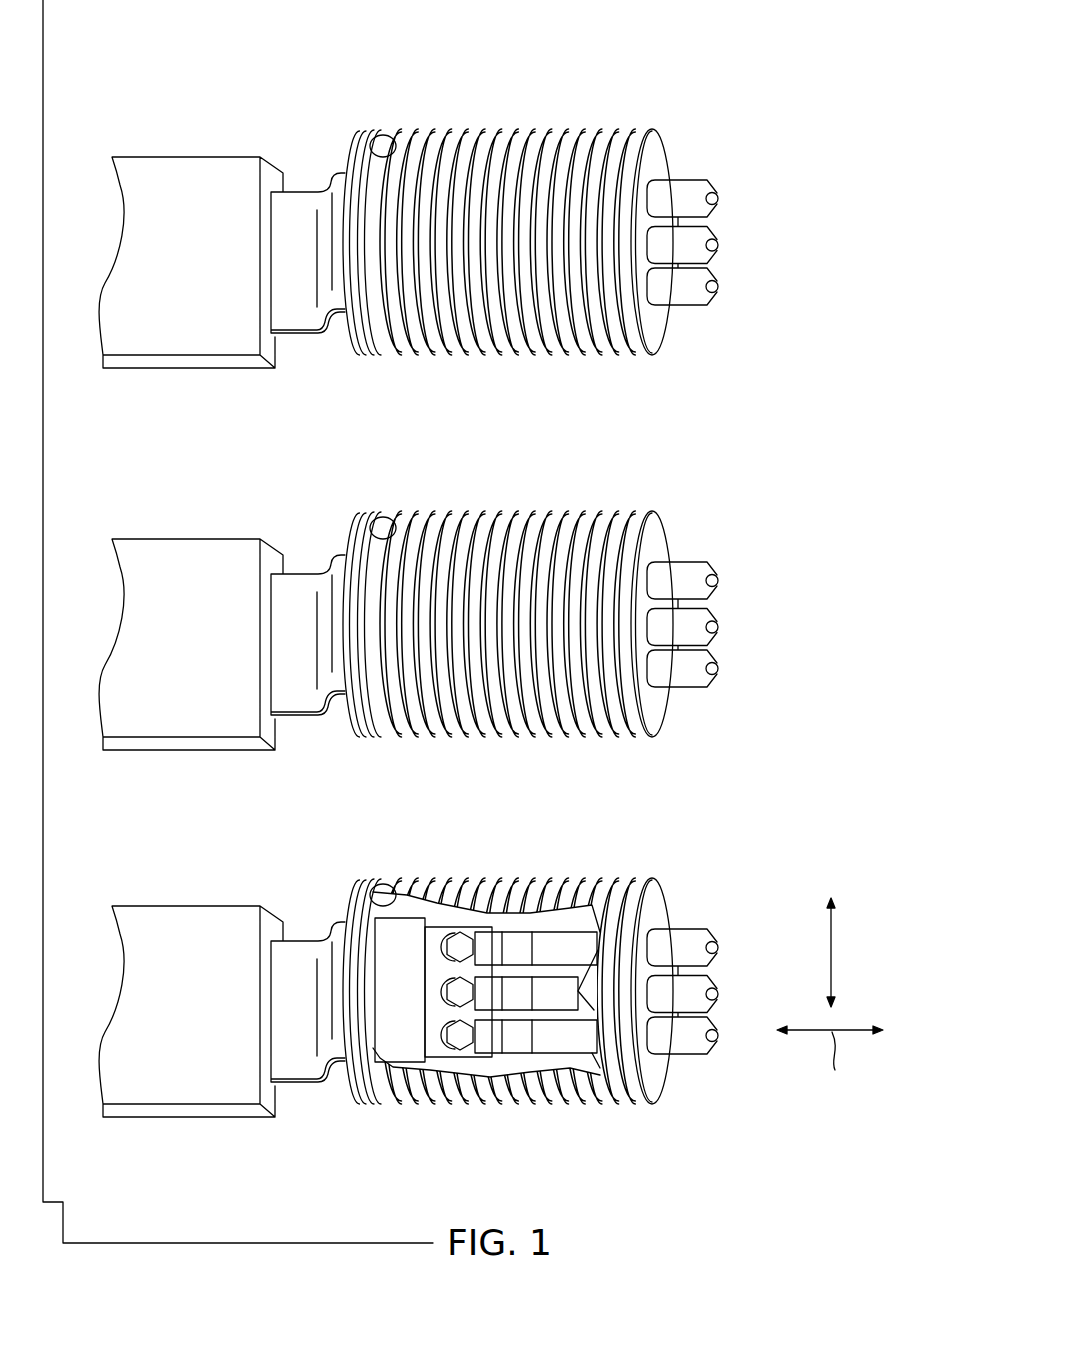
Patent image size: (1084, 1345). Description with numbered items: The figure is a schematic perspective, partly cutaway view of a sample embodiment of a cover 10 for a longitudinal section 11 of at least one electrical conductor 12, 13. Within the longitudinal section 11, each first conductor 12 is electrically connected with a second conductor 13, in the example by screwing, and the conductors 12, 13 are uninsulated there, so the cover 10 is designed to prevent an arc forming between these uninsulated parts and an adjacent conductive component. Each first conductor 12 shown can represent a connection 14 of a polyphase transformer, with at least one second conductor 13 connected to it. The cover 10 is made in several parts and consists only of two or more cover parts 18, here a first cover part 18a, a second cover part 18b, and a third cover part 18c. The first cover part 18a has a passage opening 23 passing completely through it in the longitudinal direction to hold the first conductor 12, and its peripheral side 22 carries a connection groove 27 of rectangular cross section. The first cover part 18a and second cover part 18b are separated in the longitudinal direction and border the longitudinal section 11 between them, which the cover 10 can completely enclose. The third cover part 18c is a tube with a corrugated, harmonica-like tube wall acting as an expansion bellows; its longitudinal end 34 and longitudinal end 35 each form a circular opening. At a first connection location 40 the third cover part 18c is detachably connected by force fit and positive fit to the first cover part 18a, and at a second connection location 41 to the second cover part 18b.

The cover 10 is at (683, 58).
The longitudinal section 11 is at (632, 1120).
The first conductor 12 is at (222, 622).
The second conductor 13 is at (703, 200).
The connection 14 is at (300, 200).
The cover part 18 is at (538, 591).
The first cover part 18a is at (350, 147).
The second cover part 18b is at (658, 145).
The third cover part 18c is at (530, 128).
The peripheral side 22 is at (350, 984).
The passage opening 23 is at (652, 947).
The connection groove 27 is at (357, 1005).
The longitudinal end 34 is at (370, 157).
The longitudinal end 35 is at (632, 128).
The first connection location 40 is at (363, 361).
The second connection location 41 is at (652, 366).